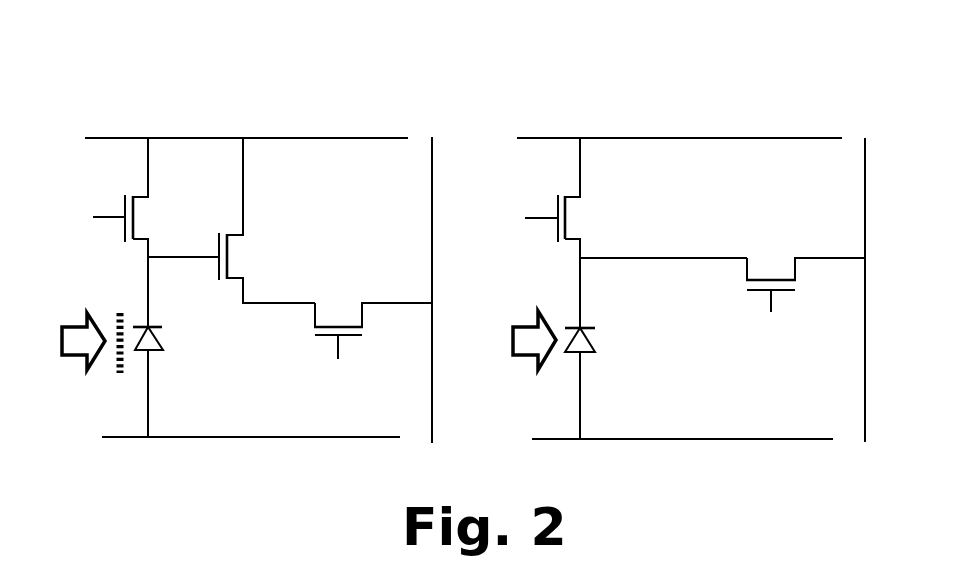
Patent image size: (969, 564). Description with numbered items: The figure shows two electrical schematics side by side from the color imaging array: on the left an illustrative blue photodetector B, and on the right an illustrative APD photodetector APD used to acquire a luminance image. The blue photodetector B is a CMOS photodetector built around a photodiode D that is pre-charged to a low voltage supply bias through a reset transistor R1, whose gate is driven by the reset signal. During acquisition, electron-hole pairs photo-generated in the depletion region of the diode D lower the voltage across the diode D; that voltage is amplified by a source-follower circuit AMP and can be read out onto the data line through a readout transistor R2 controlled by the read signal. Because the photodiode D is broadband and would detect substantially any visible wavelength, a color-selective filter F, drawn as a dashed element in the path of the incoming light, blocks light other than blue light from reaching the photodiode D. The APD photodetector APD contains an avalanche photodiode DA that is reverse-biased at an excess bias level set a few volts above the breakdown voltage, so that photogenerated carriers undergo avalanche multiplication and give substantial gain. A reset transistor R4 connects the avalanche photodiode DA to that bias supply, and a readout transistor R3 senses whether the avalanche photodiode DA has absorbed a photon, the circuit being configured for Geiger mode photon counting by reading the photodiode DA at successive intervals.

The blue photodetector B is at (252, 110).
The source-follower circuit AMP is at (300, 208).
The reset transistor R1 is at (137, 217).
The readout transistor R2 is at (337, 320).
The photodiode D is at (158, 342).
The color-selective filter F is at (117, 357).
The APD photodetector APD is at (692, 110).
The reset transistor R4 is at (572, 217).
The readout transistor R3 is at (770, 273).
The avalanche photodiode DA is at (592, 339).